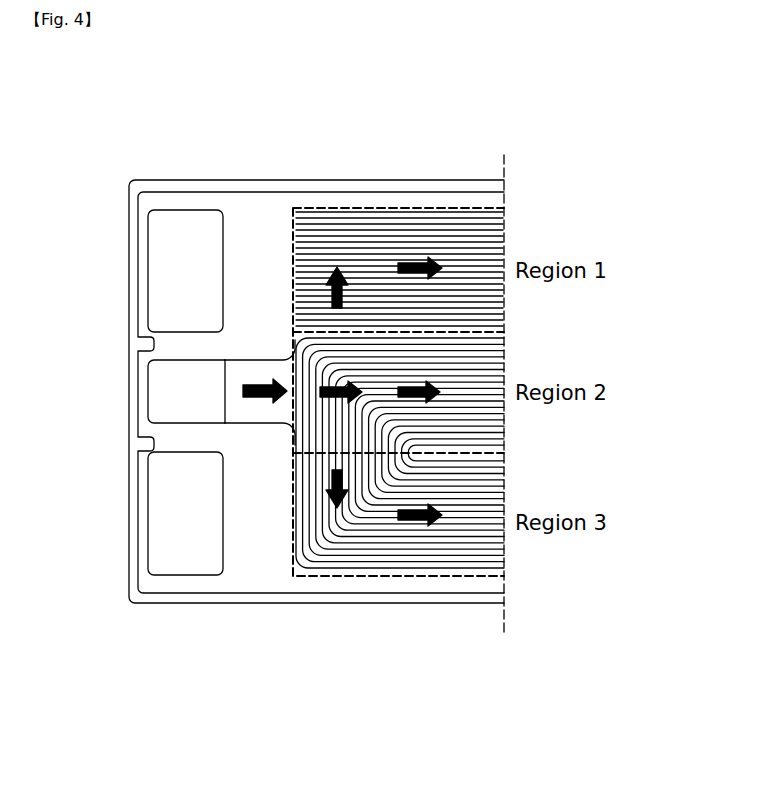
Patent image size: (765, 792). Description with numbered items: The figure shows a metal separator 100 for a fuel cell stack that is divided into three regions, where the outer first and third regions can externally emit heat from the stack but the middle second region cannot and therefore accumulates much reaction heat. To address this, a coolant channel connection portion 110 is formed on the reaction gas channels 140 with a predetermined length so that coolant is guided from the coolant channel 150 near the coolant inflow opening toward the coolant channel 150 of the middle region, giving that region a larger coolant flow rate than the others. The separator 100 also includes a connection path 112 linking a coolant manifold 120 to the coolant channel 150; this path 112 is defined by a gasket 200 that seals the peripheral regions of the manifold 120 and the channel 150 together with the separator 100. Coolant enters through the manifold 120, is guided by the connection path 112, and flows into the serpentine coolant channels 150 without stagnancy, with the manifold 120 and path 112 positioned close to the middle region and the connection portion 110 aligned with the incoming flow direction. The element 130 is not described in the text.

The metal separator 100 is at (138, 438).
The coolant channel connection portion 110 is at (307, 577).
The connection path 112 is at (247, 410).
The coolant manifold 120 is at (160, 380).
The upper manifold hole 130 is at (186, 225).
The reaction gas channels 140 is at (328, 547).
The coolant channels 150 is at (312, 450).
The gasket 200 is at (203, 582).